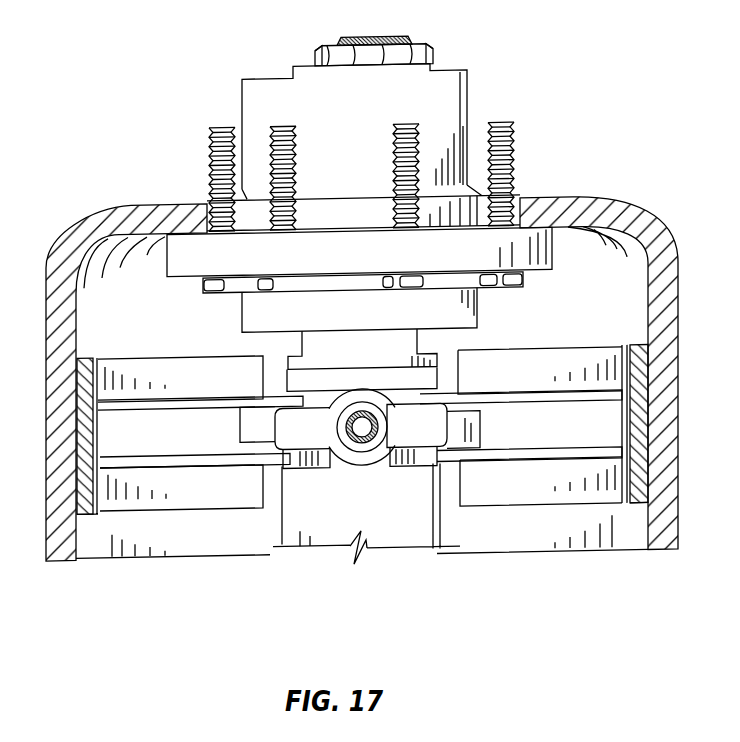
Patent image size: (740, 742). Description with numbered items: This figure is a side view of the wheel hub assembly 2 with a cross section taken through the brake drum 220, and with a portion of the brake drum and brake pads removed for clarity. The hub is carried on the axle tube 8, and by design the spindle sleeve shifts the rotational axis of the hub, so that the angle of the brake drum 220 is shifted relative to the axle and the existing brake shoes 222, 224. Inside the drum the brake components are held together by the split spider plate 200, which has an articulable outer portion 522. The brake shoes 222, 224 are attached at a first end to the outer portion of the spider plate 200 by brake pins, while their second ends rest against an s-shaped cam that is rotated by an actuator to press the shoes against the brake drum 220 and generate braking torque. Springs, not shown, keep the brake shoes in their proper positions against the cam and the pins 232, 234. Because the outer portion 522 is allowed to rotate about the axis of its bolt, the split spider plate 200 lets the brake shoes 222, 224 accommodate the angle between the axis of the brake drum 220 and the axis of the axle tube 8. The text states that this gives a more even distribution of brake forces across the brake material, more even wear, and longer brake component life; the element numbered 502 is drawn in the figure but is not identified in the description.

The wheel hub assembly 2 is at (97, 79).
The axle tube 8 is at (385, 533).
The spider plate 200 is at (376, 472).
The brake drum 220 is at (587, 204).
The brake shoe 222 is at (505, 485).
The brake shoe 224 is at (128, 496).
The pin 232 is at (403, 467).
The pin 234 is at (307, 469).
The link arm 502 is at (467, 435).
The outer portion of the spider plate 522 is at (417, 429).